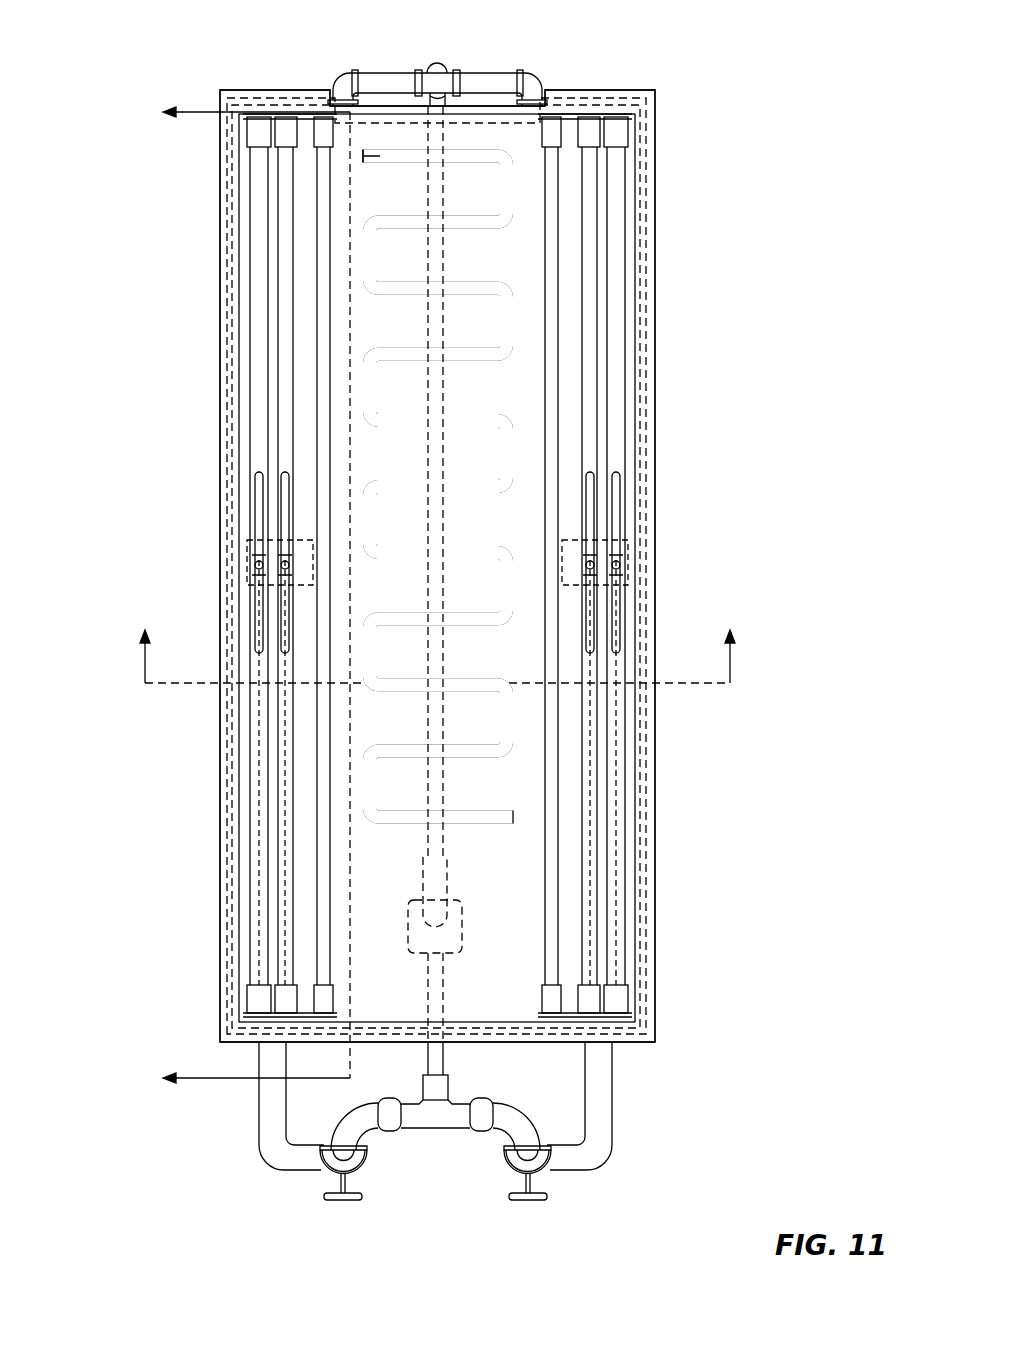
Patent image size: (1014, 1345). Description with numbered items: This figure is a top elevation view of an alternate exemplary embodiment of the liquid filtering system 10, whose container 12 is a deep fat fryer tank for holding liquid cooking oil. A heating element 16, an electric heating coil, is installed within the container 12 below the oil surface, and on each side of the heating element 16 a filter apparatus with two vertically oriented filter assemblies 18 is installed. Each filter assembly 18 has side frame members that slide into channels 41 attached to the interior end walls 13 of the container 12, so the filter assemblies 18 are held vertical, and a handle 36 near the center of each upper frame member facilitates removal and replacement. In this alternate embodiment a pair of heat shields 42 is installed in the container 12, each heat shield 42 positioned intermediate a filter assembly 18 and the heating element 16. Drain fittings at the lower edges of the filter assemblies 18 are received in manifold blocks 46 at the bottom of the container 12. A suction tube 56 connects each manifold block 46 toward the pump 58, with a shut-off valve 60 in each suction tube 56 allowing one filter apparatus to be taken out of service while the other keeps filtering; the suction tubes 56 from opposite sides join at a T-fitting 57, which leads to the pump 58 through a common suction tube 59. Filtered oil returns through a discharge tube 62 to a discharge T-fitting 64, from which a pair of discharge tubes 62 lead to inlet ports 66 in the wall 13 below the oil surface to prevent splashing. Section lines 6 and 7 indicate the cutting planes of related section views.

The liquid filtering system 10 is at (110, 36).
The container 12 is at (653, 873).
The interior end wall 13 is at (587, 1017).
The heating element 16 is at (472, 825).
The filter assembly 18 is at (262, 330).
The handle 36 is at (258, 498).
The channel 41 is at (323, 117).
The heat shield 42 is at (320, 440).
The manifold block 46 is at (265, 550).
The suction tube 56 is at (258, 1135).
The T-fitting 57 is at (437, 1130).
The pump 58 is at (450, 935).
The common suction tube 59 is at (445, 985).
The shut-off valve 60 is at (518, 1192).
The discharge tube 62 is at (400, 72).
The discharge T-fitting 64 is at (435, 72).
The inlet port 66 is at (342, 112).
The section line 6- 6 is at (439, 642).
The section line 7- 7 is at (245, 596).